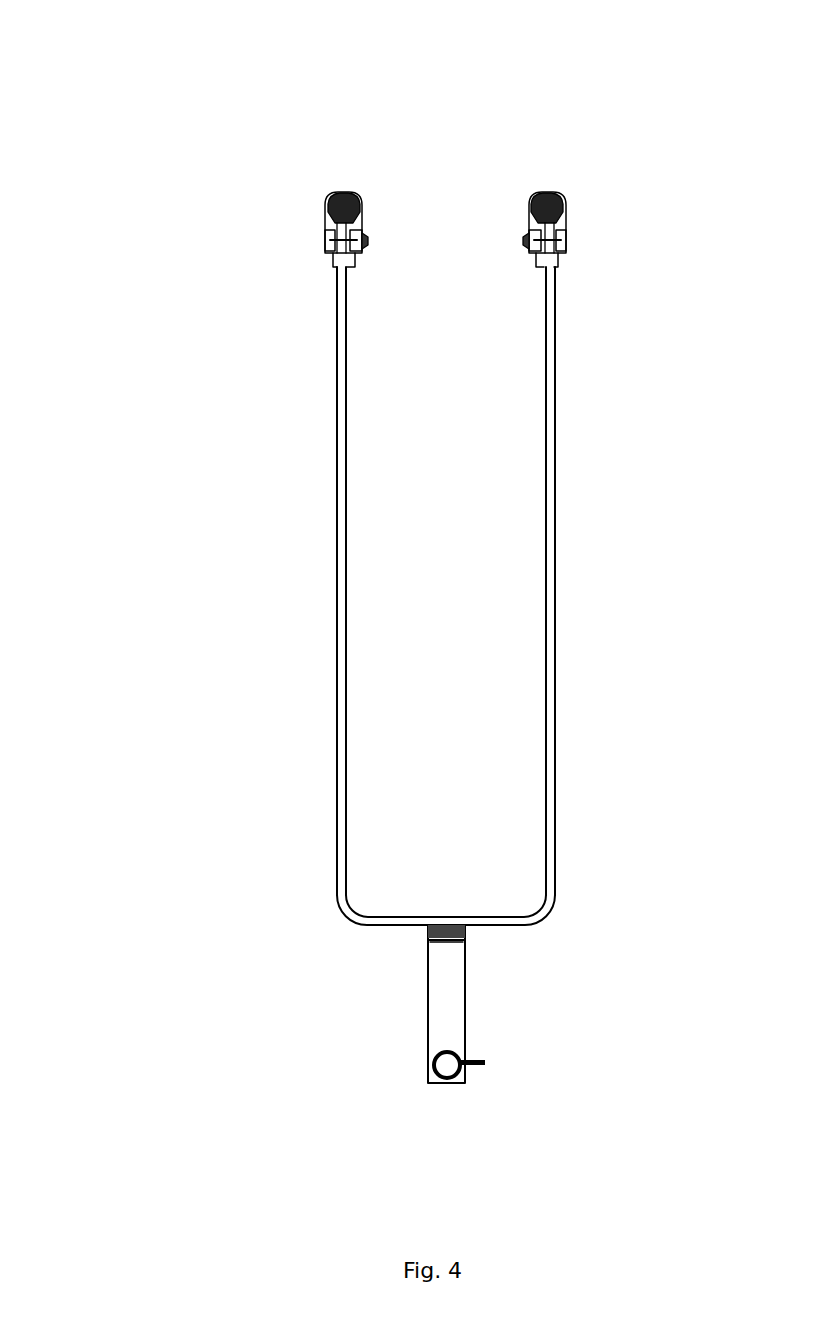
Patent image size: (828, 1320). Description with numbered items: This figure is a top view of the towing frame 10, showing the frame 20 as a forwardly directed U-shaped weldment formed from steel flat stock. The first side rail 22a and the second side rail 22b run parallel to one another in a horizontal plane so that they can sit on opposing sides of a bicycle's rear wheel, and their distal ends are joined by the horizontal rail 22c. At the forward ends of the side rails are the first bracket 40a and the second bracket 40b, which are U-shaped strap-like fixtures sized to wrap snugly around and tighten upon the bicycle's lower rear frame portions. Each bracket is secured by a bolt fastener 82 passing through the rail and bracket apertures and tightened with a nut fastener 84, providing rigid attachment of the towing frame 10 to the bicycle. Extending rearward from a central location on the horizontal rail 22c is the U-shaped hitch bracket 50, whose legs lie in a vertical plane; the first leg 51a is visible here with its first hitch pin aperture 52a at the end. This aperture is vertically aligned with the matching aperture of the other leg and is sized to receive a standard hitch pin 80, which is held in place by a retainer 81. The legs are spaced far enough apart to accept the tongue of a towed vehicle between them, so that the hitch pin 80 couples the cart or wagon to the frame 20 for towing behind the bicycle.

The towing frame 10 is at (124, 168).
The frame 20 is at (330, 736).
The first side rail 22a is at (553, 482).
The second side rail 22b is at (338, 460).
The horizontal rail 22c is at (402, 917).
The first bracket 40a is at (555, 192).
The second bracket 40b is at (345, 192).
The hitch bracket 50 is at (423, 997).
The first leg 51a is at (445, 963).
The first hitch pin aperture 52a is at (414, 1057).
The hitch pin 80 is at (438, 1068).
The retainer 81 is at (483, 1072).
The bolt fastener 82 is at (358, 253).
The nut fastener 84 is at (325, 252).